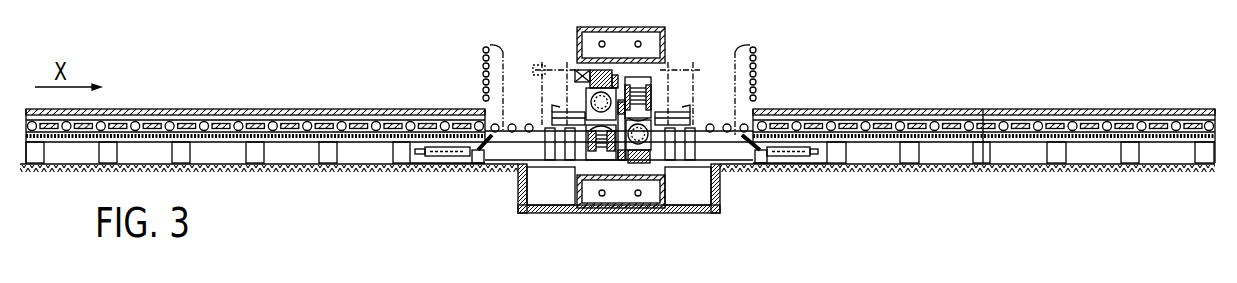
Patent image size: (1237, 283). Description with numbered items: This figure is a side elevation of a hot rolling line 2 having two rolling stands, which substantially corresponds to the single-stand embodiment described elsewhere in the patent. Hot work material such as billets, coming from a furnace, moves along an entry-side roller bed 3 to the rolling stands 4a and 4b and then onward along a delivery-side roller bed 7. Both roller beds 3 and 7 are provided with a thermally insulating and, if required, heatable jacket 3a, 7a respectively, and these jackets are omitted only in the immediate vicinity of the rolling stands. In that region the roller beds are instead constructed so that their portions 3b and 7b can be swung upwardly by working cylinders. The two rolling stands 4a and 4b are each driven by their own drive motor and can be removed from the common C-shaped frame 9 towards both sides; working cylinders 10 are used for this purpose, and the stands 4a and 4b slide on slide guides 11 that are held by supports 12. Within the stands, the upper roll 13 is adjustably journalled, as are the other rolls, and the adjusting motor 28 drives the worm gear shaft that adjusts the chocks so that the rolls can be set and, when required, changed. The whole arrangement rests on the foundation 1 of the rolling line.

The floor 1 is at (302, 208).
The hot rolling line 2 is at (872, 65).
The roller bed 3 is at (255, 105).
The jacket 3a is at (156, 109).
The portion of roller bed 3b is at (483, 68).
The rolling stand 4a is at (651, 82).
The rolling stand 4b is at (597, 76).
The roller bed 7 is at (984, 105).
The jacket 7a is at (934, 109).
The portion of roller bed 7b is at (758, 70).
The C-shaped frame 9 is at (666, 30).
The working cylinder 10 is at (499, 163).
The slide guide 11 is at (554, 118).
The support 12 is at (670, 162).
The upper roll 13 is at (591, 100).
The adjusting motor 28 is at (540, 66).